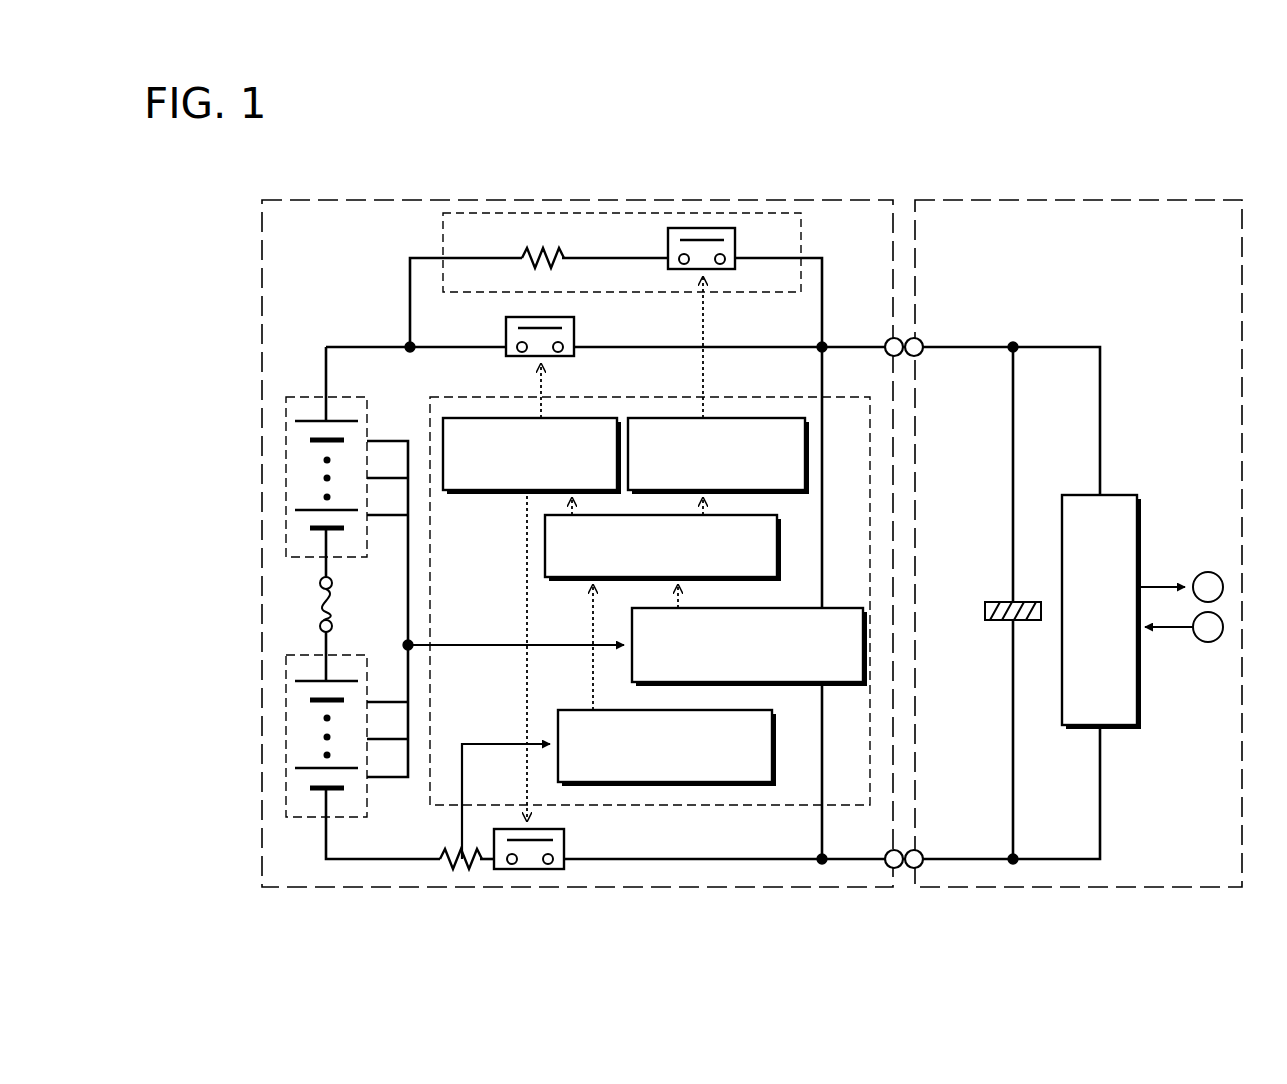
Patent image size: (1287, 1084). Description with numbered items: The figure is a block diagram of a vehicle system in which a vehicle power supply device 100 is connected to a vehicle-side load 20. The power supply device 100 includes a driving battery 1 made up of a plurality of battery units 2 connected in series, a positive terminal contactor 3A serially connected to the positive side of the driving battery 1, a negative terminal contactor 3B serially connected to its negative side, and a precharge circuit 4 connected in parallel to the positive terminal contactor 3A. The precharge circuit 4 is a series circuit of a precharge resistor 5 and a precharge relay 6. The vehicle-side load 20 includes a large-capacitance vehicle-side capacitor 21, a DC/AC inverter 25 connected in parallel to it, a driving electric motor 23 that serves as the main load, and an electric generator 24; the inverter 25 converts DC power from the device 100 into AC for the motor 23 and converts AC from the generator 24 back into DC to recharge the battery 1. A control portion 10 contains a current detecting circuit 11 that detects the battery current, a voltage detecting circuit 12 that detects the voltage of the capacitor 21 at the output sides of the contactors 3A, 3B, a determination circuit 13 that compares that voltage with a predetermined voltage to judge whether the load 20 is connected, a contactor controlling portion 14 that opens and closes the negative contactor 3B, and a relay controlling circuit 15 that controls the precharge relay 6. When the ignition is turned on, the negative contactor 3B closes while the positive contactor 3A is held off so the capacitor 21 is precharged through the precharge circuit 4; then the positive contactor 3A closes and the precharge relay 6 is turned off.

The driving battery 1 is at (245, 503).
The vehicle power supply device 100 is at (398, 200).
The vehicle-side load 20 is at (1038, 200).
The battery unit 2 is at (318, 397).
The positive terminal contactor 3A is at (506, 334).
The negative terminal contactor 3B is at (564, 850).
The precharge circuit 4 is at (801, 238).
The precharge resistor 5 is at (565, 248).
The precharge relay 6 is at (710, 228).
The control portion 10 is at (762, 805).
The current detecting circuit 11 is at (772, 748).
The voltage detecting circuit 12 is at (785, 608).
The determination circuit 13 is at (775, 515).
The contactor controlling portion 14 is at (600, 418).
The relay controlling circuit 15 is at (750, 418).
The vehicle-side capacitor 21 is at (992, 602).
The driving electric motor 23 is at (1205, 572).
The electric generator 24 is at (1208, 642).
The DC/AC inverter 25 is at (1118, 495).